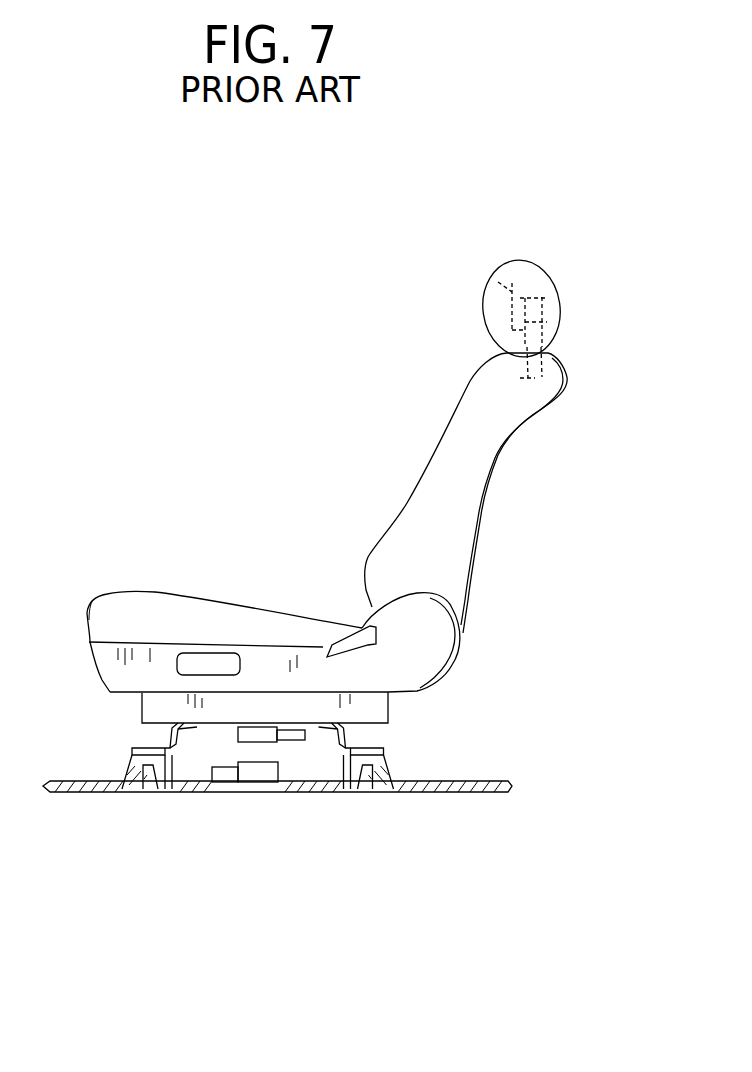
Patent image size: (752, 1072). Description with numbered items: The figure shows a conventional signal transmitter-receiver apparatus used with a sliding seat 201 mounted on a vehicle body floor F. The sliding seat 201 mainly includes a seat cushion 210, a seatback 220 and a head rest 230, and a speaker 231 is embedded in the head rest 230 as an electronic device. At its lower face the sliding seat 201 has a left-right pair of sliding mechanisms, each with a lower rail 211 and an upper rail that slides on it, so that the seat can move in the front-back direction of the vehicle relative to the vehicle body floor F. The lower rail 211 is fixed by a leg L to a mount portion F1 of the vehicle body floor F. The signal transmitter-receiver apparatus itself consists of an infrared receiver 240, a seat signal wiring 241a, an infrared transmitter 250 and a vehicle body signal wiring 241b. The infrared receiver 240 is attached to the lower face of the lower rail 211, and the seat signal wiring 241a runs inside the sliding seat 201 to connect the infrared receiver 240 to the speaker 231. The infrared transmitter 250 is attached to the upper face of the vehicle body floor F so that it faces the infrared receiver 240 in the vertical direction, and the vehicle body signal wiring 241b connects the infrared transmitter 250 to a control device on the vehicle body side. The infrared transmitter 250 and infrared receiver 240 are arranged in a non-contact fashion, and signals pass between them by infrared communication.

The sliding seat 201 is at (402, 380).
The seat cushion 210 is at (168, 592).
The lower rail 211 is at (153, 712).
The seatback 220 is at (443, 468).
The head rest 230 is at (483, 308).
The speaker 231 is at (492, 265).
The infrared receiver 240 is at (258, 732).
The seat signal wiring 241a is at (505, 338).
The vehicle body signal wiring 241b is at (223, 775).
The infrared transmitter 250 is at (257, 773).
The leg L is at (160, 738).
The vehicle body floor F is at (70, 793).
The mount portion F1 is at (150, 767).